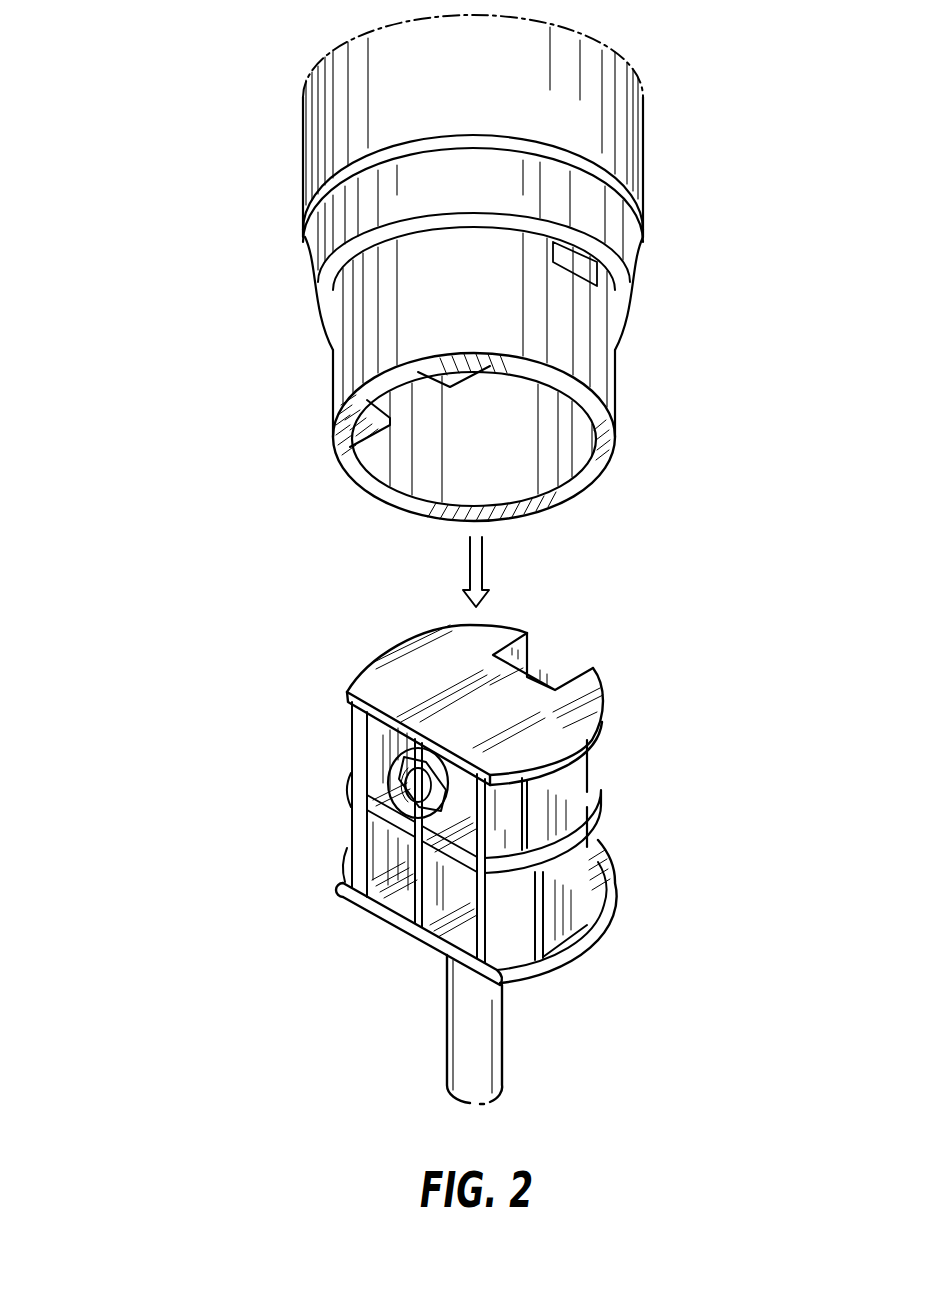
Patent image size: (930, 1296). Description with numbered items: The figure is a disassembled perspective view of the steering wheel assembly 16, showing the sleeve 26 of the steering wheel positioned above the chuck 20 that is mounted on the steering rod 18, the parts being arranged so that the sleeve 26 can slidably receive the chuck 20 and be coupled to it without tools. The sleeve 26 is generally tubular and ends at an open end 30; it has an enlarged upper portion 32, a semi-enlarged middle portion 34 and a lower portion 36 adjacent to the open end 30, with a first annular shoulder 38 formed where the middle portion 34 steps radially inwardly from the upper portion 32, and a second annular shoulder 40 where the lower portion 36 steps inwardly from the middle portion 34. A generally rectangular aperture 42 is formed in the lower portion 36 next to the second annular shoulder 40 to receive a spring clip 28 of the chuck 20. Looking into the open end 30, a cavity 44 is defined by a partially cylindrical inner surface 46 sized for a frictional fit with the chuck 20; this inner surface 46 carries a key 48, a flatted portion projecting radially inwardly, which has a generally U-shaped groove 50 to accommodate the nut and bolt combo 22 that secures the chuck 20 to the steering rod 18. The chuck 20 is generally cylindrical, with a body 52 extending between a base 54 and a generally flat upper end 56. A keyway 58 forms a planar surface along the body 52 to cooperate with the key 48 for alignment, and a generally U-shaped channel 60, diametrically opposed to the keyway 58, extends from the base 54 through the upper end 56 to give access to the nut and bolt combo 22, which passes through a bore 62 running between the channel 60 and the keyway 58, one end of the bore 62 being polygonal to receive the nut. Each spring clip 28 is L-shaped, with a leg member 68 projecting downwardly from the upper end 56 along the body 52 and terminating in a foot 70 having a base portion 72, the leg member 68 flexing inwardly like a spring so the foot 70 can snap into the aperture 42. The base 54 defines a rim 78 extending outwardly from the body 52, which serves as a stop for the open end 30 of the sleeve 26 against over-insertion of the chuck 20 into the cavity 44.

The steering wheel assembly 16 is at (97, 129).
The steering rod 18 is at (447, 1020).
The chuck 20 is at (320, 644).
The nut and bolt combo 22 is at (413, 790).
The sleeve 26 is at (236, 275).
The spring clip 28 is at (586, 774).
The open end 30 is at (588, 480).
The upper portion 32 is at (648, 126).
The middle portion 34 is at (637, 282).
The lower portion 36 is at (618, 390).
The first annular shoulder 38 is at (307, 240).
The second annular shoulder 40 is at (321, 318).
The aperture 42 is at (578, 263).
The cavity 44 is at (498, 495).
The inner surface 46 is at (507, 450).
The key 48 is at (353, 428).
The groove 50 is at (385, 400).
The body 52 is at (585, 916).
The base 54 is at (380, 915).
The upper end 56 is at (408, 657).
The keyway 58 is at (368, 725).
The channel 60 is at (523, 653).
The bore 62 is at (403, 773).
The leg member 68 is at (578, 790).
The foot 70 is at (583, 818).
The base portion 72 is at (598, 871).
The rim 78 is at (568, 955).